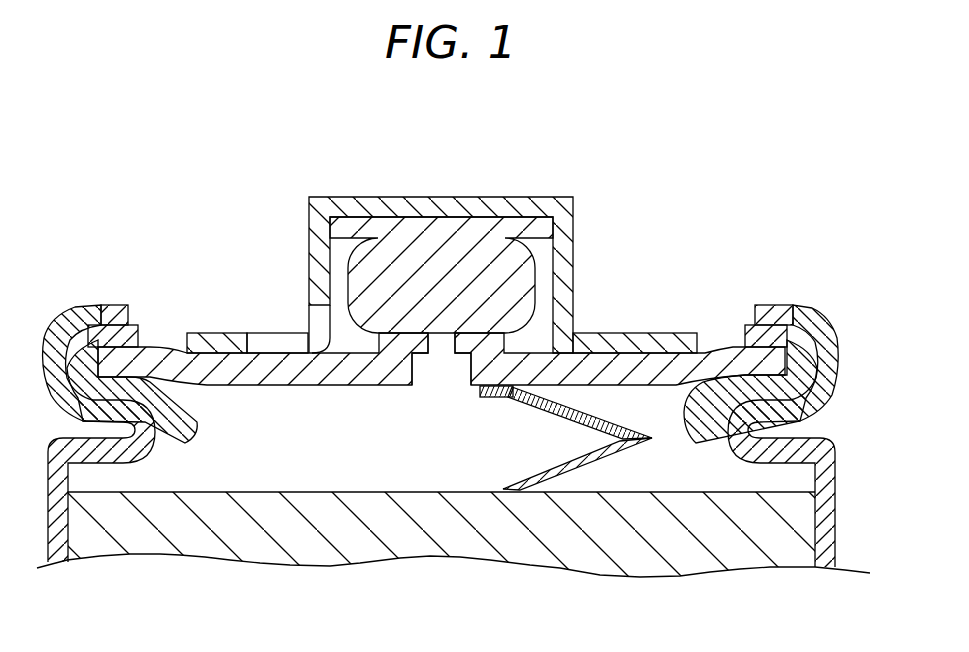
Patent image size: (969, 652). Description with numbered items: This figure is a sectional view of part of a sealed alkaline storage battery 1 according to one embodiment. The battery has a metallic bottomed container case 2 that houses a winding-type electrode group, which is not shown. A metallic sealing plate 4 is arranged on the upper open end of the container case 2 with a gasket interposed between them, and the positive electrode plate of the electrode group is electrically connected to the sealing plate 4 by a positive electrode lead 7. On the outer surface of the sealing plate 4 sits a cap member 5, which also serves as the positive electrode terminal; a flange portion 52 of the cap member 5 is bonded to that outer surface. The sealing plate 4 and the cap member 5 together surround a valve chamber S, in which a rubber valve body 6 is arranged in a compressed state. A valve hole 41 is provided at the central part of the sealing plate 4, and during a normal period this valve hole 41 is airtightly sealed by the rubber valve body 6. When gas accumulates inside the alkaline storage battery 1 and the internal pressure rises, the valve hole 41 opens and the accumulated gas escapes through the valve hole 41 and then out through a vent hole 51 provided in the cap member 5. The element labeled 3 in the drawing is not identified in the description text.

The sealed alkaline storage battery 1 is at (633, 167).
The bottomed container case 2 is at (822, 323).
The seal ring 3 is at (100, 328).
The sealing plate 4 is at (324, 377).
The valve hole 41 is at (445, 343).
The cap member 5 is at (452, 197).
The vent hole 51 is at (293, 340).
The flange portion 52 is at (665, 337).
The rubber valve body 6 is at (380, 268).
The positive electrode lead 7 is at (619, 447).
The valve chamber S is at (547, 283).